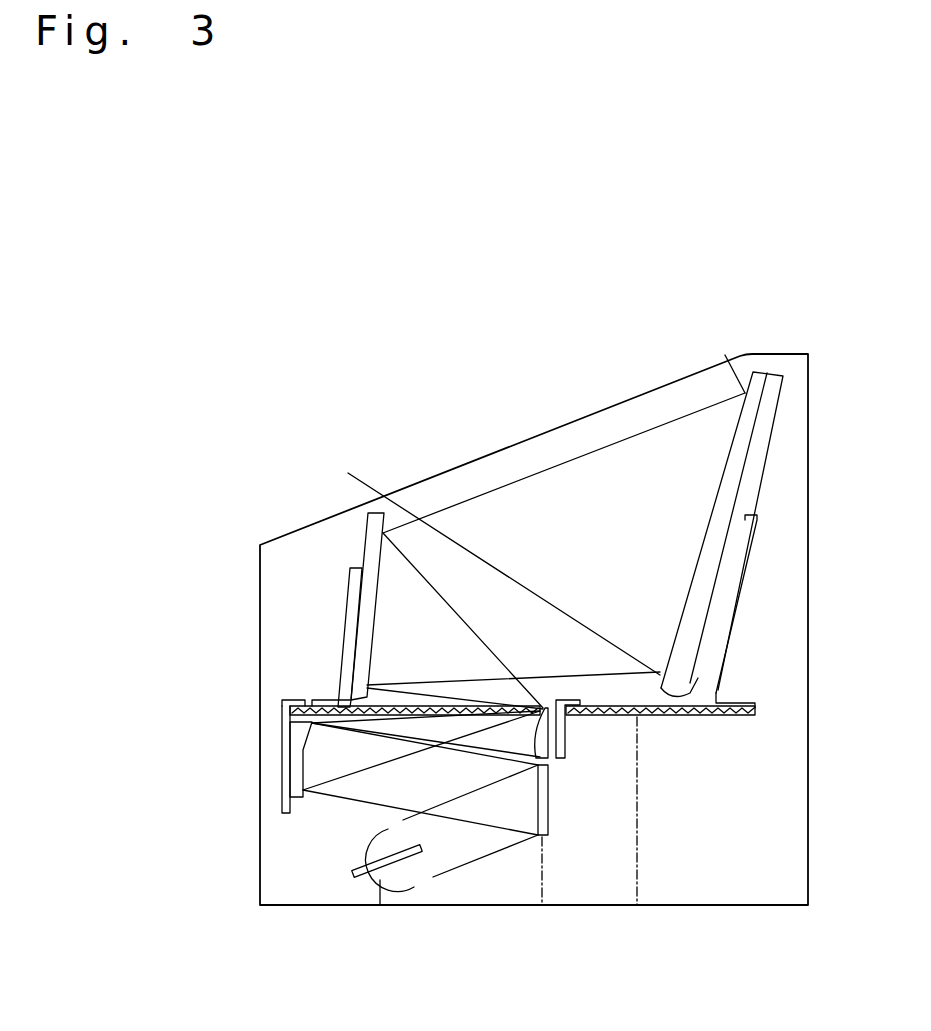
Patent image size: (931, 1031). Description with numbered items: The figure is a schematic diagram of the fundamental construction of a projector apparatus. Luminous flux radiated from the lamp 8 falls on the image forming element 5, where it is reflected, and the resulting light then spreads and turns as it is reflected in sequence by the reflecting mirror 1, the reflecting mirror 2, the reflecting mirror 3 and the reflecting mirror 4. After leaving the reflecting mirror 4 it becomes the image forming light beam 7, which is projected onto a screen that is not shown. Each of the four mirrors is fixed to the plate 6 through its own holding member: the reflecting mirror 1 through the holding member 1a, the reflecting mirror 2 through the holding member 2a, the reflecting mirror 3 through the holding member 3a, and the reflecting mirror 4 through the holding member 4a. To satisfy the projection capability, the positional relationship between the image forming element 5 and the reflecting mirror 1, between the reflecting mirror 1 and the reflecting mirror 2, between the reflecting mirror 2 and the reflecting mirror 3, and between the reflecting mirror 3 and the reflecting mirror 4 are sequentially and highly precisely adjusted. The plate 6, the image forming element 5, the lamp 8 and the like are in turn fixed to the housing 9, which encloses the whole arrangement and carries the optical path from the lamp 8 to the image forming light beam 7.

The reflecting mirror 1 is at (296, 737).
The holding member 1a is at (284, 788).
The reflecting mirror 2 is at (550, 748).
The holding member 2a is at (566, 728).
The reflecting mirror 3 is at (367, 603).
The holding member 3a is at (345, 643).
The reflecting mirror 4 is at (737, 532).
The holding member 4a is at (737, 600).
The image forming element 5 is at (550, 810).
The plate 6 is at (748, 716).
The image forming light beam 7 is at (358, 483).
The lamp 8 is at (365, 850).
The housing 9 is at (282, 698).